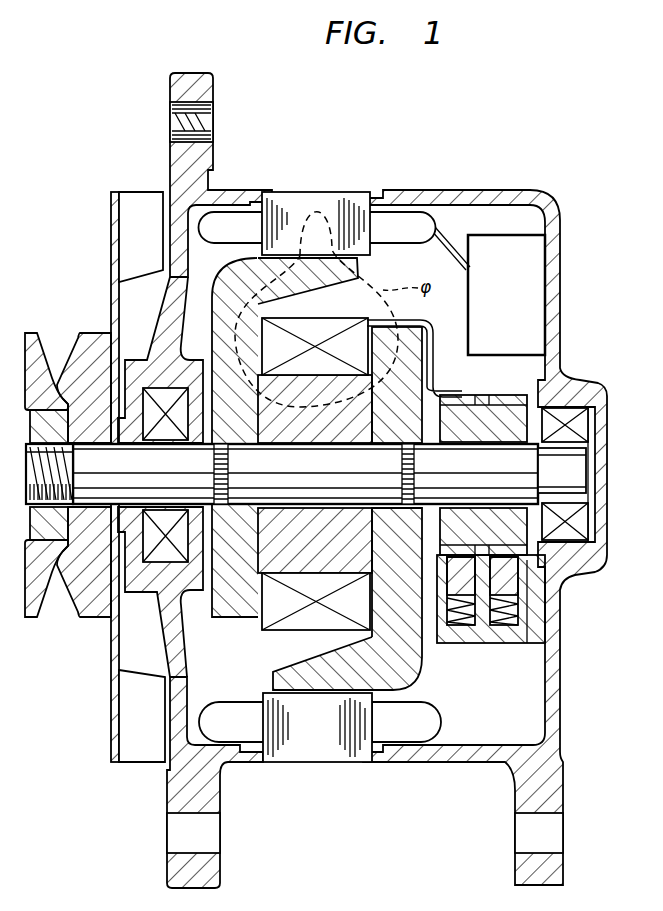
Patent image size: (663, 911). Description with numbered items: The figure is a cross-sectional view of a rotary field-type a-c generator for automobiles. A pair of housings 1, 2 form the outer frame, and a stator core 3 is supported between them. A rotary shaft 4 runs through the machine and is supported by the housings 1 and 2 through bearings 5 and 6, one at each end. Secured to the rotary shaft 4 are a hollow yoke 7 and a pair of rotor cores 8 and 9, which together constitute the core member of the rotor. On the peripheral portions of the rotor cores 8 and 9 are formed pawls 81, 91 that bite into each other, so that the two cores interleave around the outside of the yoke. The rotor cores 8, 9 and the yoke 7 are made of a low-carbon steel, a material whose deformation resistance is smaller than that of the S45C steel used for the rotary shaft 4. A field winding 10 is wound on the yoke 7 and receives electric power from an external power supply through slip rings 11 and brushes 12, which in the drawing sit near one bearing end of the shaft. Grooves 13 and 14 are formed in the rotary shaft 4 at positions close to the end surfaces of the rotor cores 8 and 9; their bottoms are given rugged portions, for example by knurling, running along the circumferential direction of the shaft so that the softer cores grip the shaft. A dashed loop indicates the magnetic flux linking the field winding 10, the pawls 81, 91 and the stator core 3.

The housing 1 is at (252, 196).
The housing 2 is at (484, 190).
The stator core 3 is at (336, 195).
The rotary shaft 4 is at (84, 550).
The bearing 5 is at (150, 388).
The bearing 6 is at (570, 535).
The hollow yoke 7 is at (272, 548).
The rotor core 8 is at (223, 603).
The pawl 81 is at (317, 283).
The rotor core 9 is at (410, 662).
The pawl 91 is at (350, 660).
The field winding 10 is at (275, 607).
The slip rings 11 is at (463, 396).
The brushes 12 is at (488, 598).
The groove 13 is at (209, 357).
The groove 14 is at (418, 463).